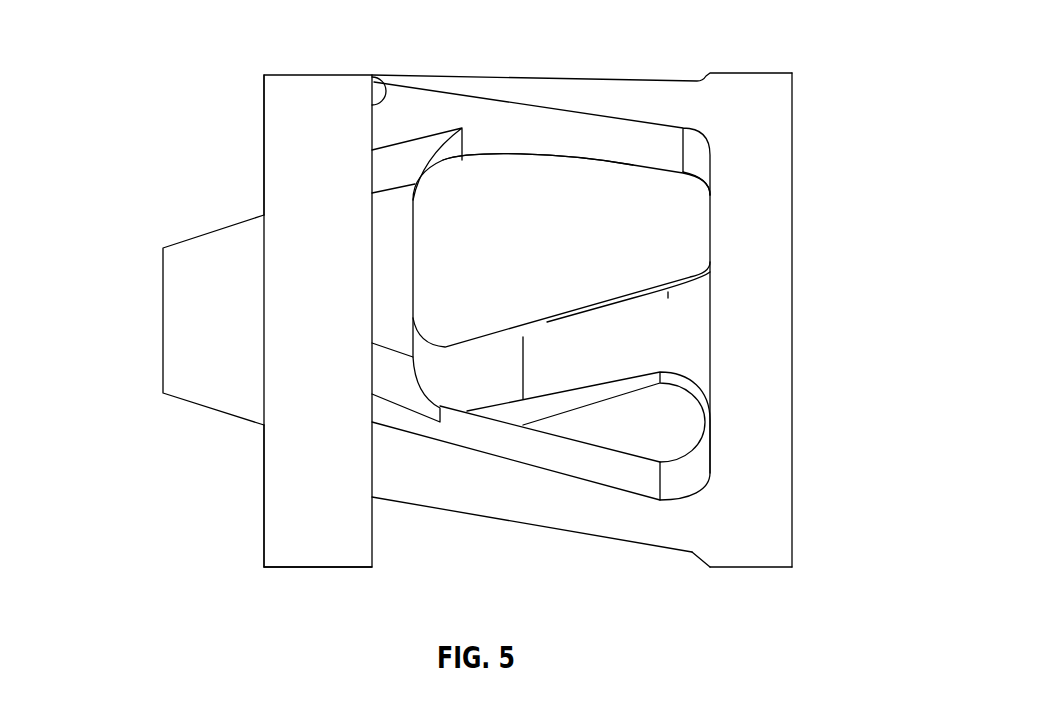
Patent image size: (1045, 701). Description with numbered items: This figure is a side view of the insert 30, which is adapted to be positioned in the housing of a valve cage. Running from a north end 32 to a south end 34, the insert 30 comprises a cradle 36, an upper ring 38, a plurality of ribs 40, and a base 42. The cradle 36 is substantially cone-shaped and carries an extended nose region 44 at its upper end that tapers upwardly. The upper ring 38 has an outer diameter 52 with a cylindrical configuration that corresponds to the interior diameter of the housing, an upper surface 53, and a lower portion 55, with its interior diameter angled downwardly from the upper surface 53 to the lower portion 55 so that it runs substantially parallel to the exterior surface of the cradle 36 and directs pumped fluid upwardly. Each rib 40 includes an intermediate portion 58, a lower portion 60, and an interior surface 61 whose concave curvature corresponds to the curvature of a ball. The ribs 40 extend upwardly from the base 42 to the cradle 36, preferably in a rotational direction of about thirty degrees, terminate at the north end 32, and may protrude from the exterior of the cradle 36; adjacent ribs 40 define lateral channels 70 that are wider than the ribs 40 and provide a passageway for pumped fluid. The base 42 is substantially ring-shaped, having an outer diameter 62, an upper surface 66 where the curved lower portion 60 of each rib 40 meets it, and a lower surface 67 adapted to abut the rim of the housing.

The insert 30 is at (809, 32).
The north end 32 is at (264, 512).
The south end 34 is at (792, 508).
The cradle 36 is at (403, 218).
The upper ring 38 is at (306, 547).
The ribs 40 is at (477, 499).
The base 42 is at (749, 542).
The nose region 44 is at (175, 325).
The outer diameter 52 is at (297, 85).
The upper surface 53 is at (264, 118).
The lower portion 55 is at (378, 82).
The intermediate portion 58 is at (566, 520).
The lower portion 60 is at (697, 530).
The interior surface 61 is at (572, 357).
The outer diameter 62 is at (770, 218).
The upper surface 66 is at (708, 231).
The lower surface 67 is at (798, 319).
The lateral channels 70 is at (545, 188).